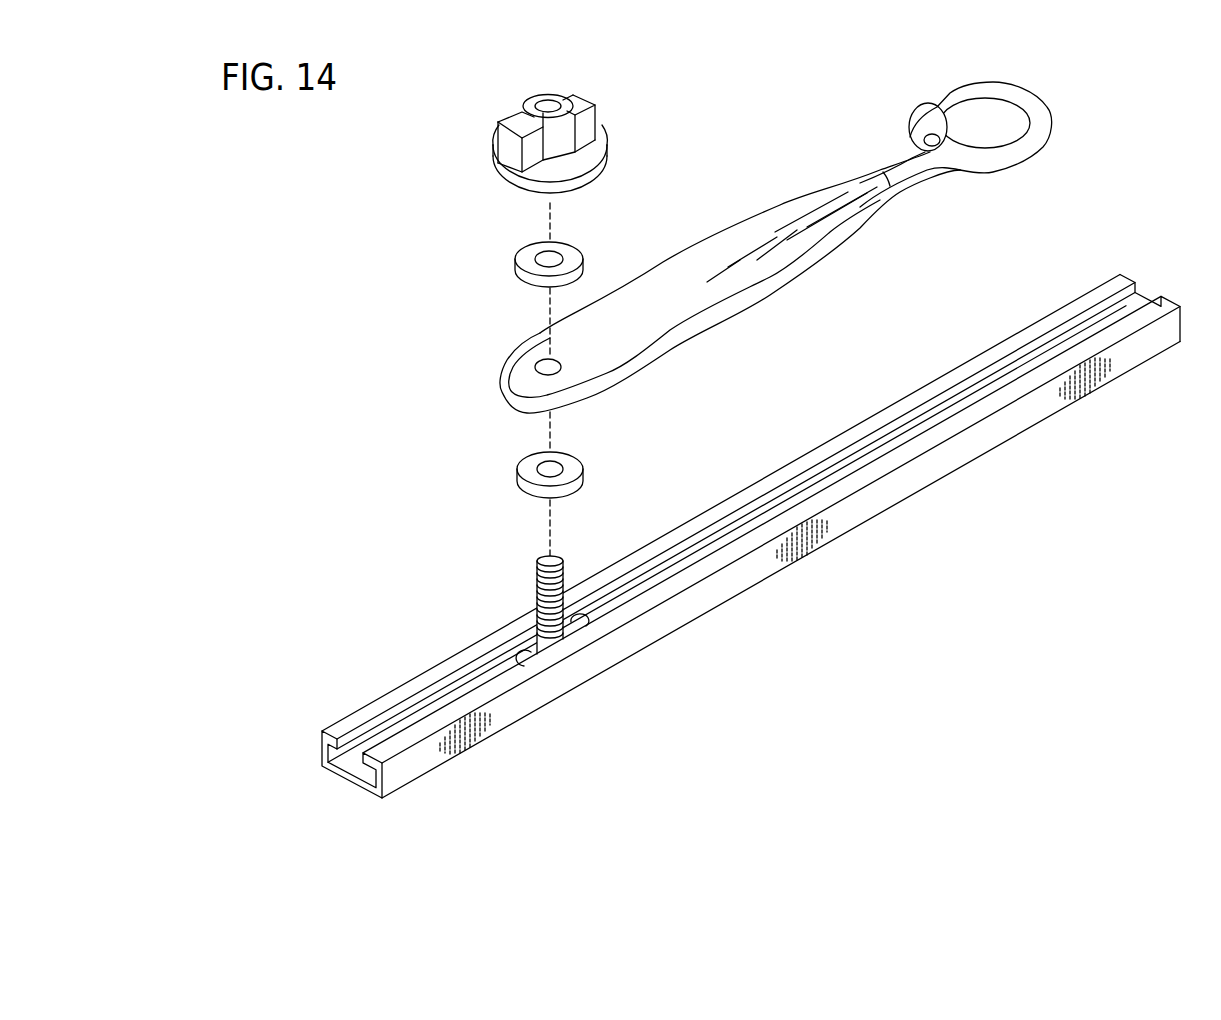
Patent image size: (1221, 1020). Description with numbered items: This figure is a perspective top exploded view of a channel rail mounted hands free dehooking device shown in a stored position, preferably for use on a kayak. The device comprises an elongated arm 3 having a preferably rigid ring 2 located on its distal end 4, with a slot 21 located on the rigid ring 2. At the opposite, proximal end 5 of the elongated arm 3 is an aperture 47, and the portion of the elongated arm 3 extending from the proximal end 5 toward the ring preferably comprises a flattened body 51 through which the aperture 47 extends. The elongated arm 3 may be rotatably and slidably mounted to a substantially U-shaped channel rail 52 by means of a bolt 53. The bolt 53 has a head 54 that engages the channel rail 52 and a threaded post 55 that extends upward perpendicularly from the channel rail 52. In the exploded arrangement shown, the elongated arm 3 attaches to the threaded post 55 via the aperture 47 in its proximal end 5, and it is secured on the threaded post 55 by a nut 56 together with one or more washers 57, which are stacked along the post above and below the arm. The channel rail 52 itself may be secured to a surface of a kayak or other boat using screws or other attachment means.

The rigid ring 2 is at (1013, 78).
The elongated arm 3 is at (755, 228).
The distal end 4 is at (900, 190).
The proximal end 5 is at (502, 382).
The slot 21 is at (923, 148).
The aperture 47 is at (557, 362).
The flattened body 51 is at (752, 232).
The channel rail 52 is at (751, 537).
The bolt 53 is at (503, 605).
The head 54 is at (527, 653).
The threaded post 55 is at (538, 573).
The nut 56 is at (575, 84).
The washers 57 is at (520, 253).